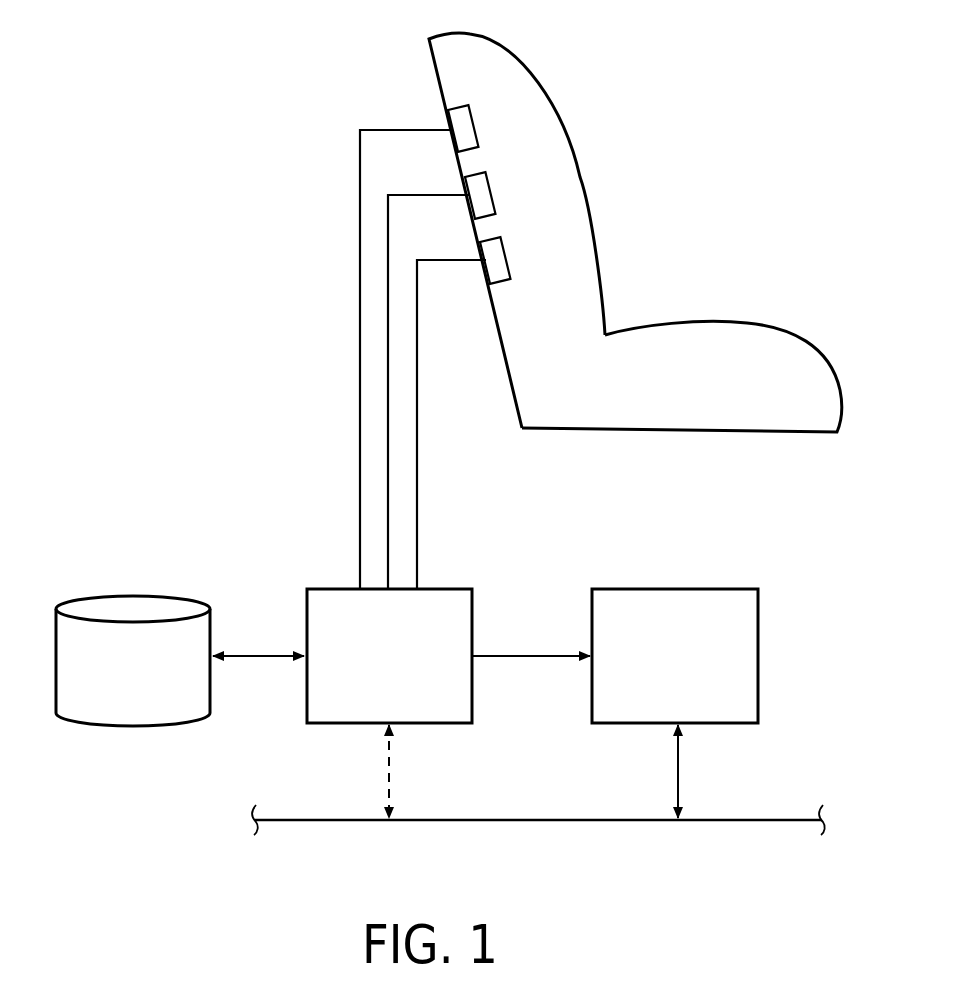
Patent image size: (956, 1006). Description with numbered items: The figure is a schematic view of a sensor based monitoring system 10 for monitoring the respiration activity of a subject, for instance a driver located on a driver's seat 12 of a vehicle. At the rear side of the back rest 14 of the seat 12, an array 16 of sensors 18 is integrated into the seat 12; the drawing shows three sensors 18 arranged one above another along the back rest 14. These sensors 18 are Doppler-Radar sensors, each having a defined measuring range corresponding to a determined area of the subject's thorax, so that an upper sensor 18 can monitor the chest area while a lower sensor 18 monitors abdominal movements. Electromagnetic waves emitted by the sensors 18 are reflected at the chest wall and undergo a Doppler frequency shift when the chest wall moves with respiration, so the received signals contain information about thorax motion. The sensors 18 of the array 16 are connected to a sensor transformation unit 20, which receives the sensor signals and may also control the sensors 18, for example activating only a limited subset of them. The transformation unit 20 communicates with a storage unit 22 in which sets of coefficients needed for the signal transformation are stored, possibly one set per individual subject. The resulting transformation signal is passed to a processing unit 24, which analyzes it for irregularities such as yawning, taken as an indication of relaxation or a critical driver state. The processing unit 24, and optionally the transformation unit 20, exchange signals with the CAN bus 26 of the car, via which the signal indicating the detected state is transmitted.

The system 10 is at (206, 357).
The driver's seat 12 is at (760, 320).
The back rest 14 is at (585, 188).
The array of sensors 16 is at (376, 99).
The sensor 18 is at (458, 128).
The sensor transformation unit 20 is at (404, 671).
The storage unit 22 is at (149, 671).
The processing unit 24 is at (697, 671).
The CAN bus 26 is at (638, 822).